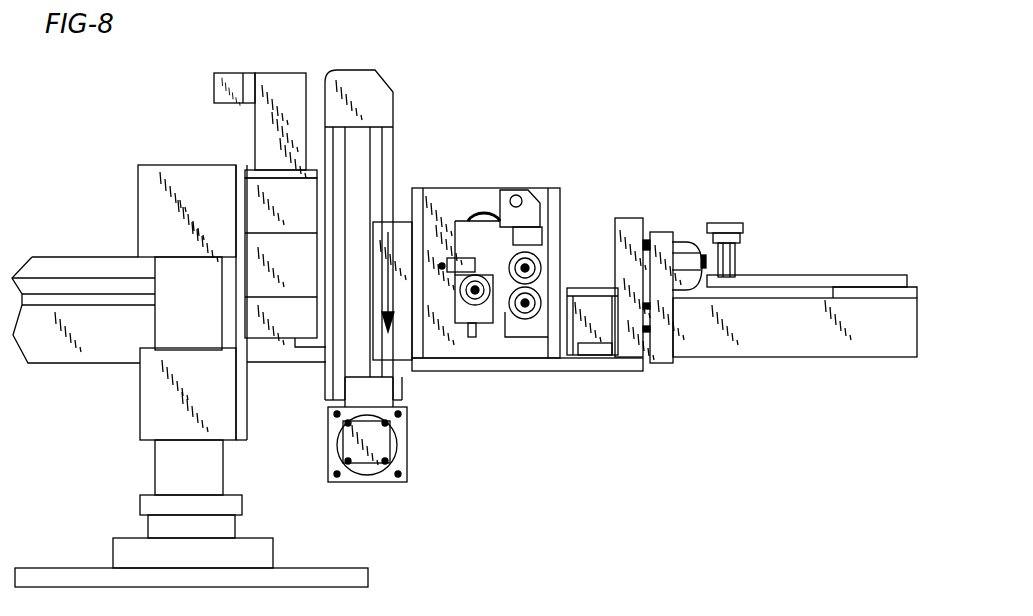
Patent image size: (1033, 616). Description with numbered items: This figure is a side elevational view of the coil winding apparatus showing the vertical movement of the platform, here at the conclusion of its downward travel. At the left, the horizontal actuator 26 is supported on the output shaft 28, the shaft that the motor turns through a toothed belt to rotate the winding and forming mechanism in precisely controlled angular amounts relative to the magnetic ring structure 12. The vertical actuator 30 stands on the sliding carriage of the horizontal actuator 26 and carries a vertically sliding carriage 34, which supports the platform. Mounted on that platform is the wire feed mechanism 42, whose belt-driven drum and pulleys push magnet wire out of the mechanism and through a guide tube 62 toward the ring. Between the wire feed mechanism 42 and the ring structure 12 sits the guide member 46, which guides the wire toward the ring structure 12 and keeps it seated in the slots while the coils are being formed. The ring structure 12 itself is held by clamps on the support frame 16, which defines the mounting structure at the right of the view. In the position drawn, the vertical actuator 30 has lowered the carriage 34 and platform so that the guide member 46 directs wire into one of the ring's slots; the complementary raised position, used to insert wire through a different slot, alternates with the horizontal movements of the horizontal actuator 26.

The magnetic ring structure 12 is at (707, 232).
The support frame 16 is at (795, 352).
The horizontal actuator 26 is at (252, 217).
The output shaft 28 is at (212, 309).
The vertical actuator 30 is at (382, 216).
The vertically sliding carriage 34 is at (391, 352).
The wire feed mechanism 42 is at (527, 254).
The guide member 46 is at (649, 264).
The guide tube 62 is at (592, 283).